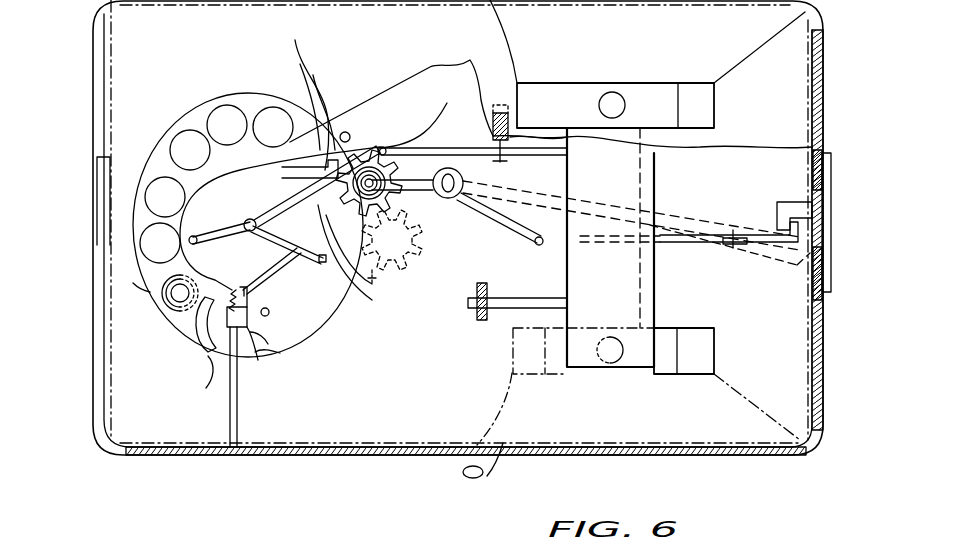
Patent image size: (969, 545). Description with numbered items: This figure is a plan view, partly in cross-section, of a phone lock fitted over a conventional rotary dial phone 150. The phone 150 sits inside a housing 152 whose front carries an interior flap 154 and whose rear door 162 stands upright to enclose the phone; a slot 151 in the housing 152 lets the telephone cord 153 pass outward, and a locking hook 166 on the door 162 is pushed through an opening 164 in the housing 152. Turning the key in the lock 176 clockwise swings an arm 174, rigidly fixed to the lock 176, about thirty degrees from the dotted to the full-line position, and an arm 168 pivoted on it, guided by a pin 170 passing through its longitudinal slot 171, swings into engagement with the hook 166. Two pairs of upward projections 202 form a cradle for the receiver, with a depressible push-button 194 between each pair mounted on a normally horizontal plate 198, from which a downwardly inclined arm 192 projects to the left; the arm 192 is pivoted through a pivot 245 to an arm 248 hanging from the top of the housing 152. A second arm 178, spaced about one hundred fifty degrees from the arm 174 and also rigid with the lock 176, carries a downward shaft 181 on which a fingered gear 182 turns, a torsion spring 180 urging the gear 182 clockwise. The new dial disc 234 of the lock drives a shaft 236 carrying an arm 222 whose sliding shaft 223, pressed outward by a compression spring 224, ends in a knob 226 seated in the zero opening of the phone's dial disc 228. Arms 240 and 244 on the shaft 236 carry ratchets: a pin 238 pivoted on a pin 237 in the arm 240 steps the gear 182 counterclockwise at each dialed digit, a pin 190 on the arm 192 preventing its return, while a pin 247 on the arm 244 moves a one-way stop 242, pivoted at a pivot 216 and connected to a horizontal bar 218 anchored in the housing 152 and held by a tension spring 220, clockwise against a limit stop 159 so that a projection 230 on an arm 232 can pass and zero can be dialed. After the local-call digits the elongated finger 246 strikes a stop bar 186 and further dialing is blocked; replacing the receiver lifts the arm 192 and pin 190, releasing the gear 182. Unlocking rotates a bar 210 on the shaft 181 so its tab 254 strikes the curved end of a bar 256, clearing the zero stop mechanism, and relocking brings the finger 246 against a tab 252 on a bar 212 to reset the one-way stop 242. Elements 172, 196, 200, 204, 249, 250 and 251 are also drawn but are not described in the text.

The phone 150 is at (512, 393).
The slot 151 is at (512, 432).
The housing 152 is at (483, 62).
The telephone cord 153 is at (455, 478).
The flap 154 is at (107, 247).
The limit stop 159 is at (280, 353).
The rear door 162 is at (830, 270).
The opening 164 is at (812, 193).
The locking hook 166 is at (782, 200).
The arm 168 is at (665, 213).
The pin 170 is at (732, 250).
The longitudinal slot 171 is at (740, 213).
The pivot pin 172 is at (540, 246).
The arm 174 is at (503, 213).
The lock 176 is at (460, 200).
The arm 178 is at (403, 180).
The torsion spring 180 is at (393, 200).
The shaft 181 is at (382, 145).
The gear 182 is at (360, 150).
The stop bar 186 is at (345, 132).
The pin 190 is at (448, 103).
The arm 192 is at (477, 147).
The push-button 194 is at (633, 67).
The block 196 is at (620, 355).
The plate 198 is at (648, 155).
The block 200 is at (715, 352).
The upward projections 202 is at (714, 83).
The arm 204 is at (792, 228).
The bar 210 is at (300, 64).
The bar 212 is at (270, 312).
The pivot 216 is at (258, 358).
The bar 218 is at (238, 423).
The tension spring 220 is at (235, 292).
The arm 222 is at (223, 233).
The shaft 223 is at (178, 310).
The compression spring 224 is at (175, 306).
The knob 226 is at (198, 338).
The dial disc 228 is at (249, 340).
The projection 230 is at (140, 290).
The arm 232 is at (237, 230).
The new dial disc 234 is at (211, 98).
The shaft 236 is at (250, 217).
The pin 237 is at (313, 77).
The pin 238 is at (293, 33).
The arm 240 is at (290, 167).
The one-way stop 242 is at (270, 340).
The arm 244 is at (297, 252).
The pivot 245 is at (503, 160).
The elongated finger 246 is at (380, 275).
The pin 247 is at (343, 297).
The arm 248 is at (493, 115).
The stop 249 is at (492, 310).
The pawl 250 is at (212, 362).
The bar 251 is at (548, 285).
The tab 252 is at (370, 280).
The tab 254 is at (283, 213).
The bar 256 is at (293, 270).